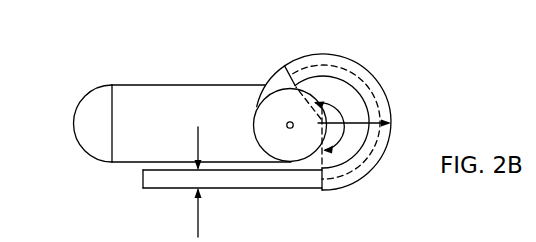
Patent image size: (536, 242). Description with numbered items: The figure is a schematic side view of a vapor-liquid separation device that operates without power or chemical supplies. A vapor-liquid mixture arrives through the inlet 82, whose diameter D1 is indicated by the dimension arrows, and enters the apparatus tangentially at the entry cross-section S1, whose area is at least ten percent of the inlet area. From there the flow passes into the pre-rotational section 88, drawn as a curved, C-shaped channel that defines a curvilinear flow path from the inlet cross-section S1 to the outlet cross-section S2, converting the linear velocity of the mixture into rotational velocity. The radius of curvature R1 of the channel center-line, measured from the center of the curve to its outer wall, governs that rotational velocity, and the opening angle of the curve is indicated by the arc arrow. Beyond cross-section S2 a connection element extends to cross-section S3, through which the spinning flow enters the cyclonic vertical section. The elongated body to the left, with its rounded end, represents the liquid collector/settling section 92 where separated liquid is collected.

The inlet port 82 is at (123, 200).
The pre-rotational section 88 is at (377, 162).
The liquid collector/settling section 92 is at (143, 84).
The inlet cross-section S1 is at (321, 181).
The outlet cross-section of the pre-rotational element S2 is at (294, 85).
The connection element outlet cross-section S3 is at (269, 93).
The radius of curvature R1 is at (391, 123).
The inlet diameter D1 is at (179, 182).